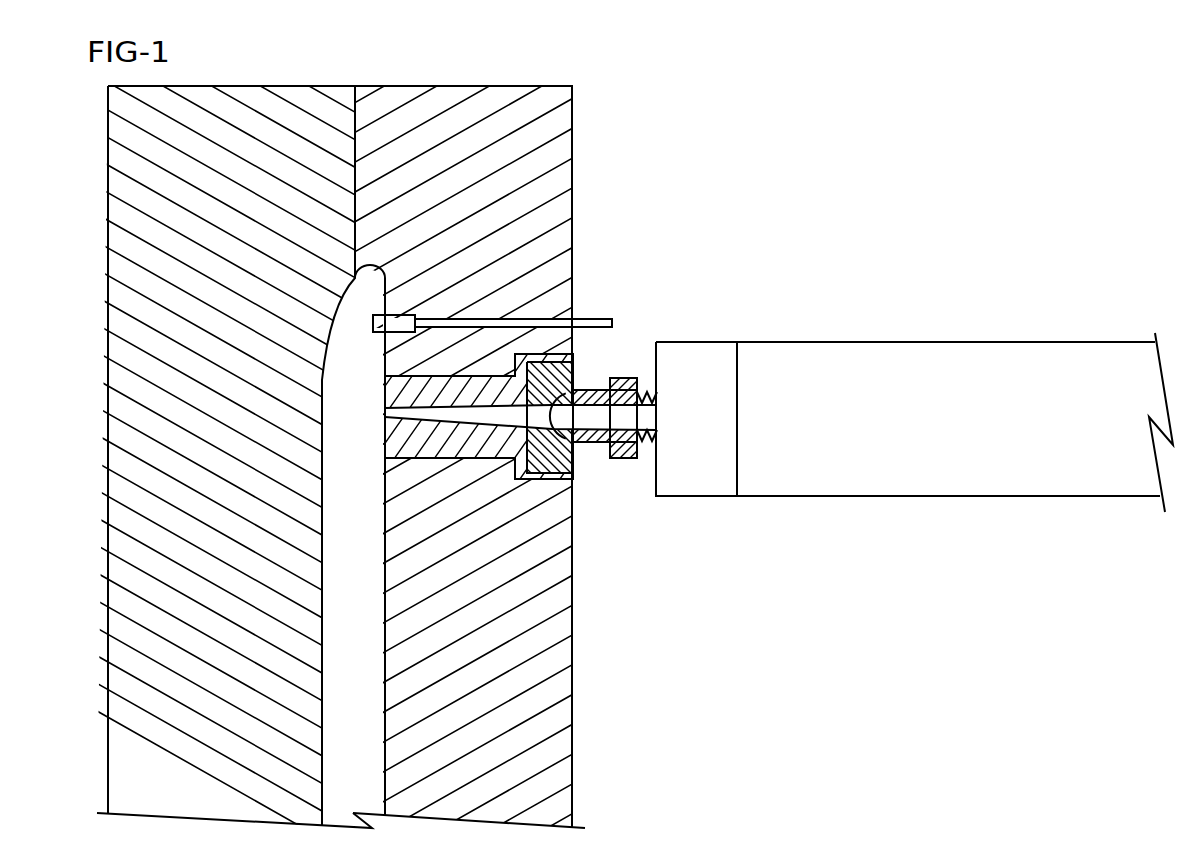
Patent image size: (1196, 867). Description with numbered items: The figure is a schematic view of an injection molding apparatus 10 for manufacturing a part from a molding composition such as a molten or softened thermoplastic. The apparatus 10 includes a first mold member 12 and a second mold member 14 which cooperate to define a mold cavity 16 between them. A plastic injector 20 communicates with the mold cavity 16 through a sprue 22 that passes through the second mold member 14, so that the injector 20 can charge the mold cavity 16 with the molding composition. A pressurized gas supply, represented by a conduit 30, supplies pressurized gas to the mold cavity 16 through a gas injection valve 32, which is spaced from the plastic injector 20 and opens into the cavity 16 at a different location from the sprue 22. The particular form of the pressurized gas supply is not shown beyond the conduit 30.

The injection molding apparatus 10 is at (631, 433).
The first mold member 12 is at (277, 103).
The second mold member 14 is at (458, 113).
The mold cavity 16 is at (363, 588).
The plastic injector 20 is at (890, 438).
The sprue 22 is at (508, 403).
The conduit 30 is at (597, 312).
The gas injection valve 32 is at (370, 328).